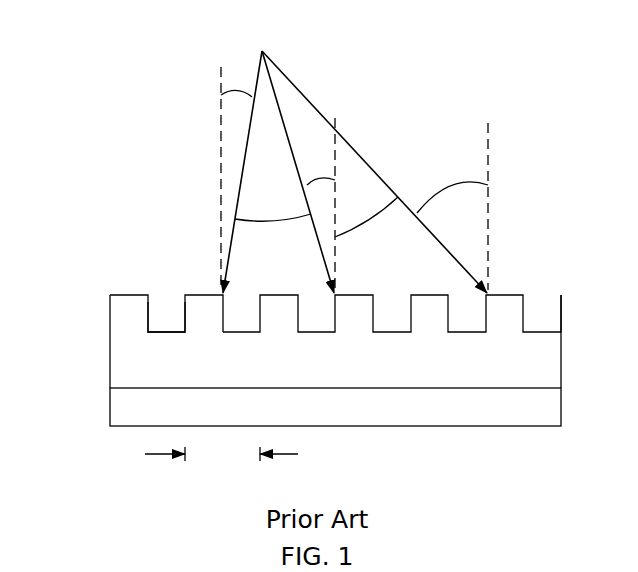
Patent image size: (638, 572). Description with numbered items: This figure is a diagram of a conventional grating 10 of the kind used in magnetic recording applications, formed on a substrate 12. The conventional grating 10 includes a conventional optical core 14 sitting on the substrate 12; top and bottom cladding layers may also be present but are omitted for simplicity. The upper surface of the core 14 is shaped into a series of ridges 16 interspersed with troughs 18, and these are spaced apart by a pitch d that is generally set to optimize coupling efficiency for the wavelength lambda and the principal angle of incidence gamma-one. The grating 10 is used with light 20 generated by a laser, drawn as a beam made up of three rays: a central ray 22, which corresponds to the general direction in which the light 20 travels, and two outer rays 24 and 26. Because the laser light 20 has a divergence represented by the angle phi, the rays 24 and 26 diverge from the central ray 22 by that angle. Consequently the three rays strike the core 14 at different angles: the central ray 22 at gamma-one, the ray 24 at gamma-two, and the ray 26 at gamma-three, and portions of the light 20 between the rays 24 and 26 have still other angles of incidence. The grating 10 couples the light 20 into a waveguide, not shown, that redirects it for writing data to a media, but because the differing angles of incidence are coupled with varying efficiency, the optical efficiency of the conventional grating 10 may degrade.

The conventional grating 10 is at (302, 43).
The substrate 12 is at (391, 428).
The conventional optical core 14 is at (110, 368).
The ridges 16 is at (535, 308).
The troughs 18 is at (168, 312).
The light 20 is at (132, 200).
The central ray 22 is at (285, 127).
The ray 24 is at (375, 167).
The ray 26 is at (242, 180).